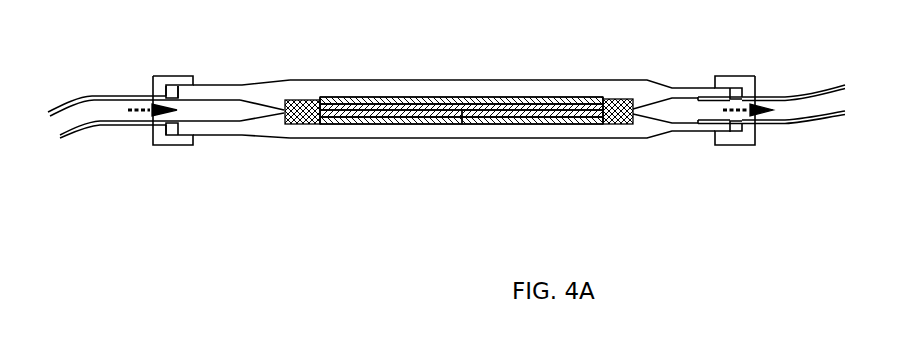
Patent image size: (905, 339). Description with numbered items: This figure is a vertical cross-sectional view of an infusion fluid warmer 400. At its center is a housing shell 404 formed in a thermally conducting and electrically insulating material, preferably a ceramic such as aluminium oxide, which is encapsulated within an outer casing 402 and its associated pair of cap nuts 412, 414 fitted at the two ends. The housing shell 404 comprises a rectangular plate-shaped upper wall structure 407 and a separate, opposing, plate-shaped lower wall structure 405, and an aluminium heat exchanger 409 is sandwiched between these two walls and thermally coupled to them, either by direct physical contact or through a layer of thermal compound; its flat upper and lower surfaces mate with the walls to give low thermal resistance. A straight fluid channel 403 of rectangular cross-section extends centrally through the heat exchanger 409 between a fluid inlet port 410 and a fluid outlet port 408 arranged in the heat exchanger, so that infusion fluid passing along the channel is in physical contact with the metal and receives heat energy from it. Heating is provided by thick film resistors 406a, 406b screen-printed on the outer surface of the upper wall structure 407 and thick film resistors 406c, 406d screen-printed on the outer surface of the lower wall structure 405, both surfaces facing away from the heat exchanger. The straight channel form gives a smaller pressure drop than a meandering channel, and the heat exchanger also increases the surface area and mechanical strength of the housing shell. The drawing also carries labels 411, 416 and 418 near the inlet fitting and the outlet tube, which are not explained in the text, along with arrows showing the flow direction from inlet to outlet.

The infusion fluid warmer 400 is at (178, 265).
The outer casing 402 is at (328, 81).
The fluid channel 403 is at (308, 125).
The housing shell 404 is at (637, 100).
The lower wall structure 405 is at (603, 124).
The thick film resistor 406a is at (383, 88).
The thick film resistor 406b is at (523, 97).
The thick film resistor 406c is at (510, 125).
The thick film resistor 406d is at (352, 124).
The upper wall structure 407 is at (602, 97).
The fluid outlet port 408 is at (640, 112).
The aluminium heat exchanger 409 is at (290, 120).
The fluid inlet port 410 is at (280, 112).
The inlet fitting body 411 is at (160, 96).
The cap nut 412 is at (178, 76).
The cap nut 414 is at (753, 76).
The outlet tube 416 is at (783, 127).
The inlet tube 418 is at (118, 127).